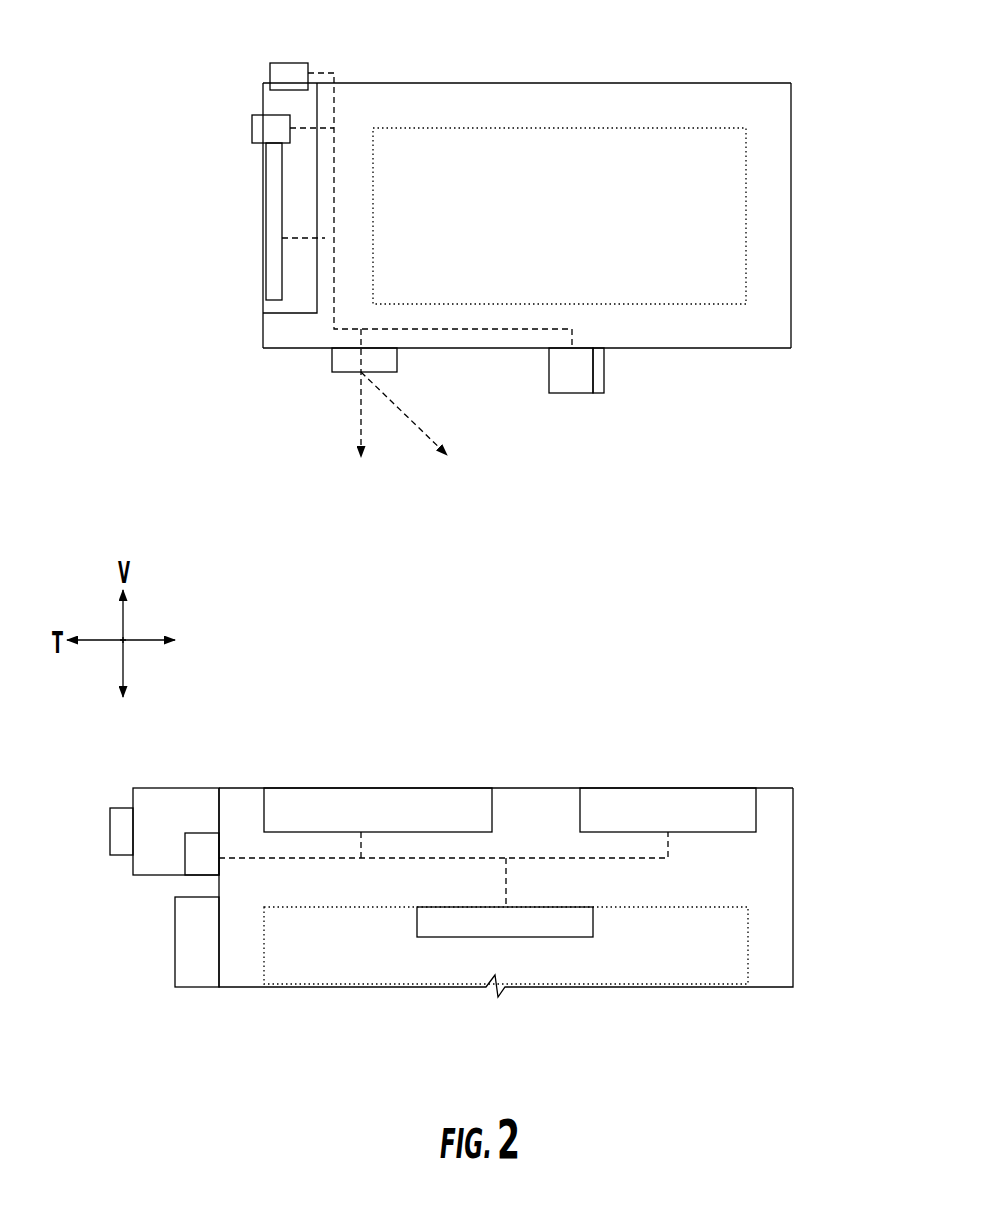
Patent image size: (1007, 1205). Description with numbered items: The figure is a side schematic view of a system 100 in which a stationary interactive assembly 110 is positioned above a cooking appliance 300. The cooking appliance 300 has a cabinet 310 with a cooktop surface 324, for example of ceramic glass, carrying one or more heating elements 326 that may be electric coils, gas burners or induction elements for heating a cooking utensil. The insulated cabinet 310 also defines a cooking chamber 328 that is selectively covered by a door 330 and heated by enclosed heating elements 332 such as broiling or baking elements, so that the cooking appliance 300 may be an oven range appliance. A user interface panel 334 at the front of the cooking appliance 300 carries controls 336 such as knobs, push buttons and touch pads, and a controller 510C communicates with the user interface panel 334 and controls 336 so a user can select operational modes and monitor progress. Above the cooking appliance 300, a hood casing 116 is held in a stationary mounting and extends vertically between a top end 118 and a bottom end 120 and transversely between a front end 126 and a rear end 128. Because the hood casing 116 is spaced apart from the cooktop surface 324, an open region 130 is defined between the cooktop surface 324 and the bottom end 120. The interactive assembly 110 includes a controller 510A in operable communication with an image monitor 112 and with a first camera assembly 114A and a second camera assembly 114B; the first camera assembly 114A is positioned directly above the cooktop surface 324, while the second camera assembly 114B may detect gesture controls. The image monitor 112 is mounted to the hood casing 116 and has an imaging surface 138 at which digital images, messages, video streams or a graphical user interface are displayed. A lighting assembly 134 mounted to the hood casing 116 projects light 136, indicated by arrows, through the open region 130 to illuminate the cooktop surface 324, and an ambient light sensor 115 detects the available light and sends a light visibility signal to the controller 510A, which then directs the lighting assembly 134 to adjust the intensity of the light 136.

The system 100 is at (92, 193).
The interactive assembly 110 is at (815, 177).
The image monitor 112 is at (262, 227).
The first camera assembly 114A is at (572, 380).
The second camera assembly 114B is at (252, 130).
The ambient light sensor 115 is at (603, 372).
The hood casing 116 is at (760, 97).
The top end 118 is at (676, 83).
The bottom end 120 is at (705, 350).
The front end 126 is at (262, 333).
The rear end 128 is at (793, 322).
The open region 130 is at (553, 726).
The lighting assembly 134 is at (338, 360).
The light 136 is at (405, 410).
The imaging surface 138 is at (262, 273).
The cooking appliance 300 is at (822, 878).
The cabinet 310 is at (783, 963).
The cooktop surface 324 is at (535, 786).
The heating elements 326 is at (305, 800).
The cooking chamber 328 is at (647, 971).
The door 330 is at (188, 960).
The heating elements 332 is at (420, 920).
The user interface panel 334 is at (133, 805).
The controls 336 is at (117, 838).
The controller 510A is at (323, 88).
The controller 510C is at (195, 865).